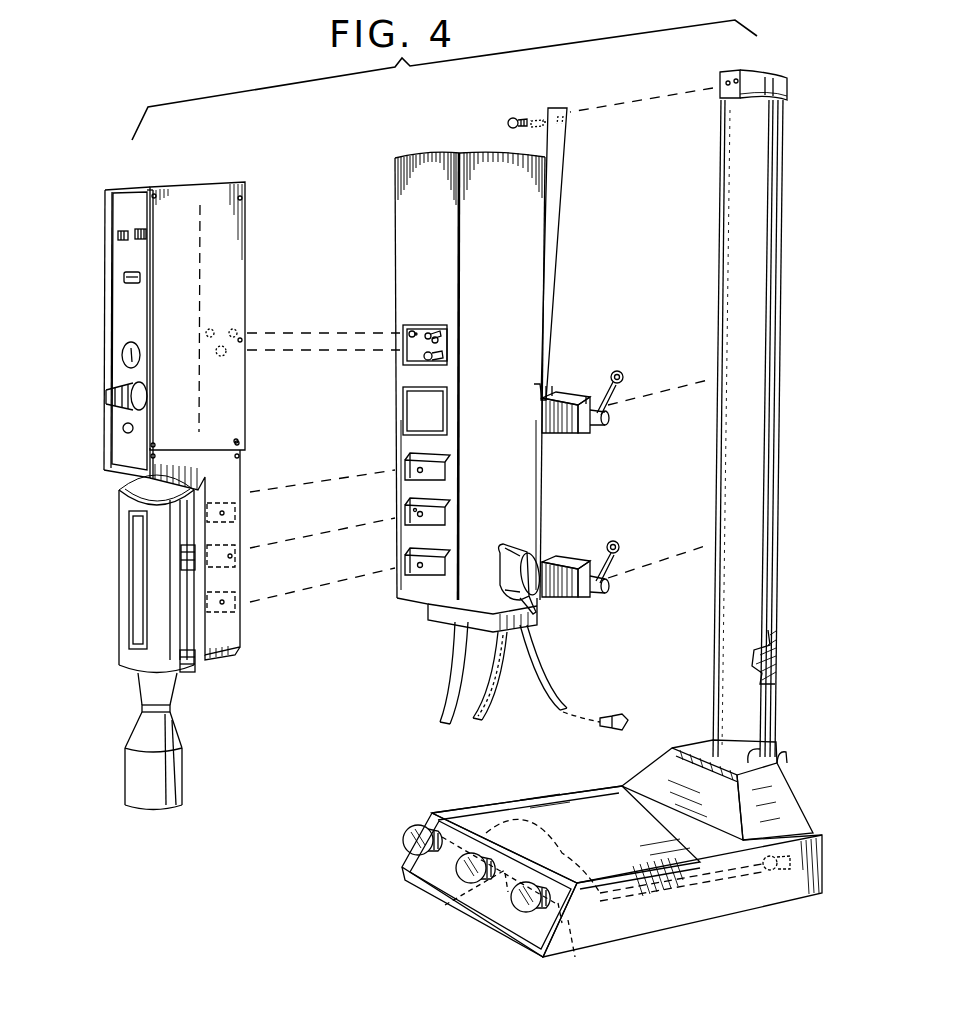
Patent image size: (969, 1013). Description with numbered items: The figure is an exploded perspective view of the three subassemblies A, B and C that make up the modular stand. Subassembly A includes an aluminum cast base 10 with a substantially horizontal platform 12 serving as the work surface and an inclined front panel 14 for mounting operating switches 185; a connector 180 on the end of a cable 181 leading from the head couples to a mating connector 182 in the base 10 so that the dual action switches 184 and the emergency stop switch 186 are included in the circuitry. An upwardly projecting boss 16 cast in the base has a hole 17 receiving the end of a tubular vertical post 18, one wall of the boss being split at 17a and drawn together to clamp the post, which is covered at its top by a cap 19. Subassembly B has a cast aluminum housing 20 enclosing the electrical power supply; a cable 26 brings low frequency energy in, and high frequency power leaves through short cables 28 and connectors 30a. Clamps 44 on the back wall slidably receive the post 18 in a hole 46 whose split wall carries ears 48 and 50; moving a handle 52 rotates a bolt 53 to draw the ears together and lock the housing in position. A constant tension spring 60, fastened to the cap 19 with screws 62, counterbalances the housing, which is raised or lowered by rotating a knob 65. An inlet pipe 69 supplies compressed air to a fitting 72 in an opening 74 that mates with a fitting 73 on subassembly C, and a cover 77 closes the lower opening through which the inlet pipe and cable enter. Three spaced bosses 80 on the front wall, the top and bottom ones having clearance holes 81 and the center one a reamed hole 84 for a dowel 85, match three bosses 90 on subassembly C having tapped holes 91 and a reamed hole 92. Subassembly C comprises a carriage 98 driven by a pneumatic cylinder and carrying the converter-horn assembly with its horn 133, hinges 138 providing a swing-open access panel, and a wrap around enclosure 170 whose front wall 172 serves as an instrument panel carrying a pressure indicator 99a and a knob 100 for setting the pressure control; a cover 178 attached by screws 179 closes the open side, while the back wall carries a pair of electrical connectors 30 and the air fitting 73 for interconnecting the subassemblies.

The base 10 is at (706, 900).
The platform 12 is at (590, 827).
The front panel 14 is at (495, 890).
The boss 16 is at (785, 806).
The hole 17 is at (756, 760).
The split 17a is at (784, 754).
The post 18 is at (735, 305).
The cap 19 is at (770, 75).
The housing 20 is at (406, 234).
The cable 26 is at (480, 700).
The short cables 28 is at (425, 330).
The electrical connectors 30 is at (212, 330).
The connectors 30a is at (412, 330).
The clamp 44 is at (570, 433).
The hole 46 is at (534, 384).
The ear 48 is at (572, 397).
The ear 50 is at (588, 397).
The handle 52 is at (619, 371).
The bolt 53 is at (610, 420).
The constant tension spring 60 is at (560, 126).
The screws 62 is at (520, 114).
The knob 65 is at (515, 552).
The inlet pipe 69 is at (455, 672).
The fitting 72 is at (445, 358).
The fitting 73 is at (222, 357).
The opening 74 is at (400, 362).
The cover 77 is at (445, 620).
The bosses 80 is at (406, 471).
The clearance holes 81 is at (422, 466).
The reamed hole 84 is at (422, 515).
The dowel 85 is at (410, 521).
The bosses 90 is at (236, 505).
The tapped holes 91 is at (218, 502).
The reamed hole 92 is at (222, 560).
The carriage 98 is at (108, 606).
The pressure indicator 99a is at (124, 362).
The knob 100 is at (104, 394).
The horn 133 is at (138, 772).
The hinges 138 is at (184, 673).
The wrap around enclosure 170 is at (90, 265).
The front wall 172 is at (126, 301).
The cover 178 is at (232, 258).
The screws 179 is at (236, 440).
The connector 180 is at (630, 718).
The cable 181 is at (536, 665).
The mating connector 182 is at (772, 870).
The dual action switches 184 is at (428, 880).
The knobs 185 is at (410, 828).
The emergency stop switch 186 is at (445, 905).